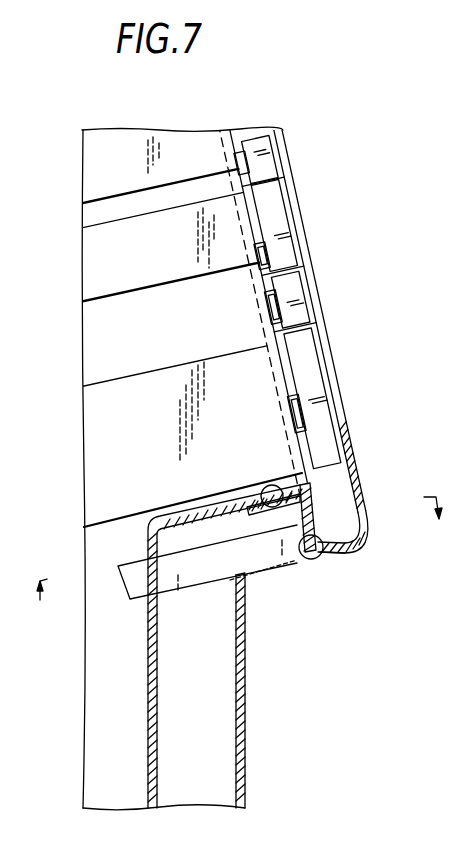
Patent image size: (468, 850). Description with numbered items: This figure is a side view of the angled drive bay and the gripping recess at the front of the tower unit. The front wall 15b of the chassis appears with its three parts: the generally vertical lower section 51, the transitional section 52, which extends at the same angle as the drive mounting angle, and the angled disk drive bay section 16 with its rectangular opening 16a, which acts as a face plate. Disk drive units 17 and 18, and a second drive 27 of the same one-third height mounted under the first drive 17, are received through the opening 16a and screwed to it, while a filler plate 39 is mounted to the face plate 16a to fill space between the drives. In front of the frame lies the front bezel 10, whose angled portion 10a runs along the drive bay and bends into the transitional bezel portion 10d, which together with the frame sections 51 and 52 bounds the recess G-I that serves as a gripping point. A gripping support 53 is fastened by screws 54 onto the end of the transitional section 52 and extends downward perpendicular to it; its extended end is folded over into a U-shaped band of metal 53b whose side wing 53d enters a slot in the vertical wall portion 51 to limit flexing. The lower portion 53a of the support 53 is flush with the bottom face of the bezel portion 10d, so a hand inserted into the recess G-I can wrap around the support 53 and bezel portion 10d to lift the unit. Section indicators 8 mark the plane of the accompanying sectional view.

The angled section 16 is at (229, 133).
The rectangular opening 16a is at (256, 352).
The disk drive unit 17 is at (263, 150).
The second disk drive 27 is at (280, 212).
The filler plate 39 is at (301, 302).
The disk drive unit 18 is at (315, 367).
The wall of housing 10a is at (353, 462).
The transitional bezel portion 10d is at (347, 553).
The U-shaped band of metal 53b is at (368, 533).
The transitional section 52 is at (146, 518).
The front wall 15b is at (157, 698).
The vertical lower section 51 is at (158, 775).
The gripping support 53 is at (306, 513).
The screws 54 is at (265, 486).
The pivot of bracket 53a is at (314, 559).
The side wing 53d is at (207, 563).
The front bezel 10 is at (245, 756).
The recess G-I is at (243, 591).
The section line 8- 8 is at (239, 563).